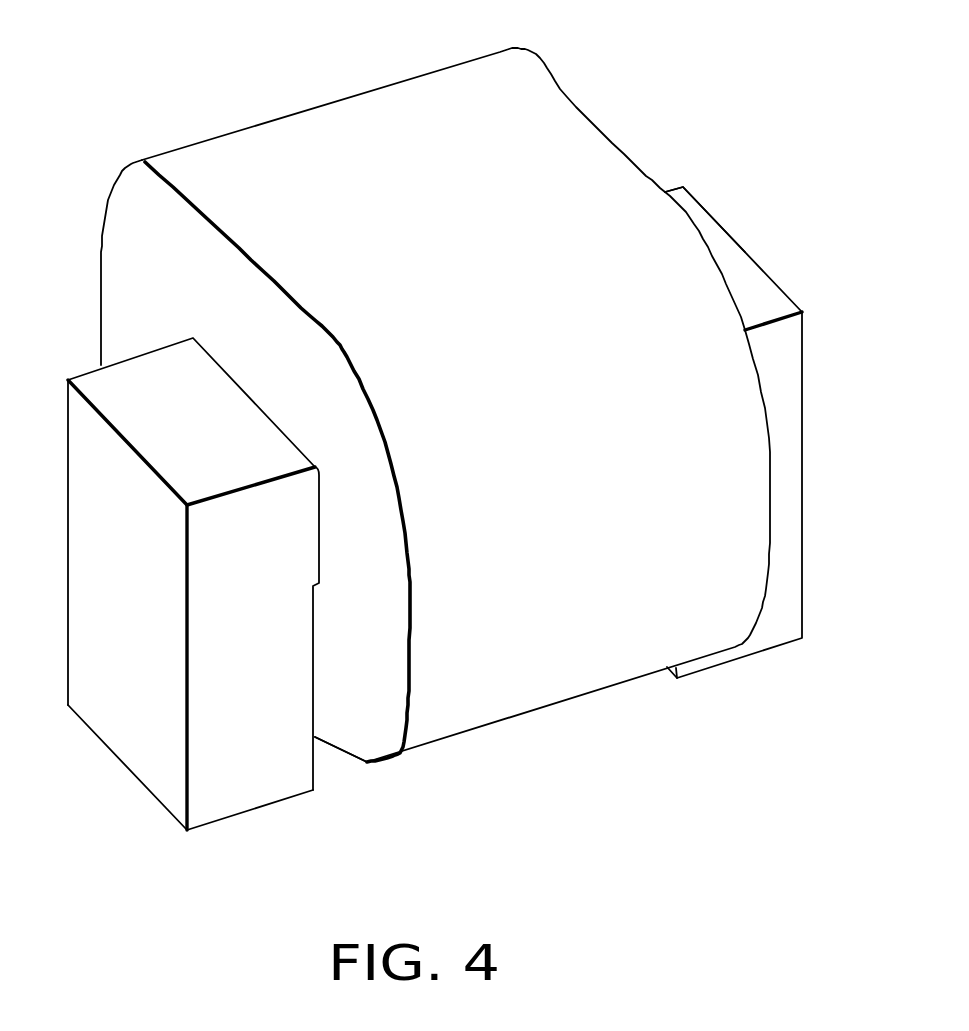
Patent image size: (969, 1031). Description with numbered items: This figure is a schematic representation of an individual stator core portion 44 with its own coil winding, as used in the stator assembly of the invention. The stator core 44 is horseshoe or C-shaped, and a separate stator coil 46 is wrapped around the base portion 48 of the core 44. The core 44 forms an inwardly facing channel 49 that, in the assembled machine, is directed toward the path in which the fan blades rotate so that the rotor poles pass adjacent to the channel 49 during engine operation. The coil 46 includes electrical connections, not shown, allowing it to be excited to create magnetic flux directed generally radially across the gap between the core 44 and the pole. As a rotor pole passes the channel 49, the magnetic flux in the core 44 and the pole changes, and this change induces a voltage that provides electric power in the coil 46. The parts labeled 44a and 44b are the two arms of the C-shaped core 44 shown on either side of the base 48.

The core portion 44 is at (128, 66).
The first mounting block 44a is at (120, 715).
The second mounting plate 44b is at (782, 410).
The stator coil 46 is at (528, 660).
The base portion 48 is at (735, 267).
The channel 49 is at (315, 702).